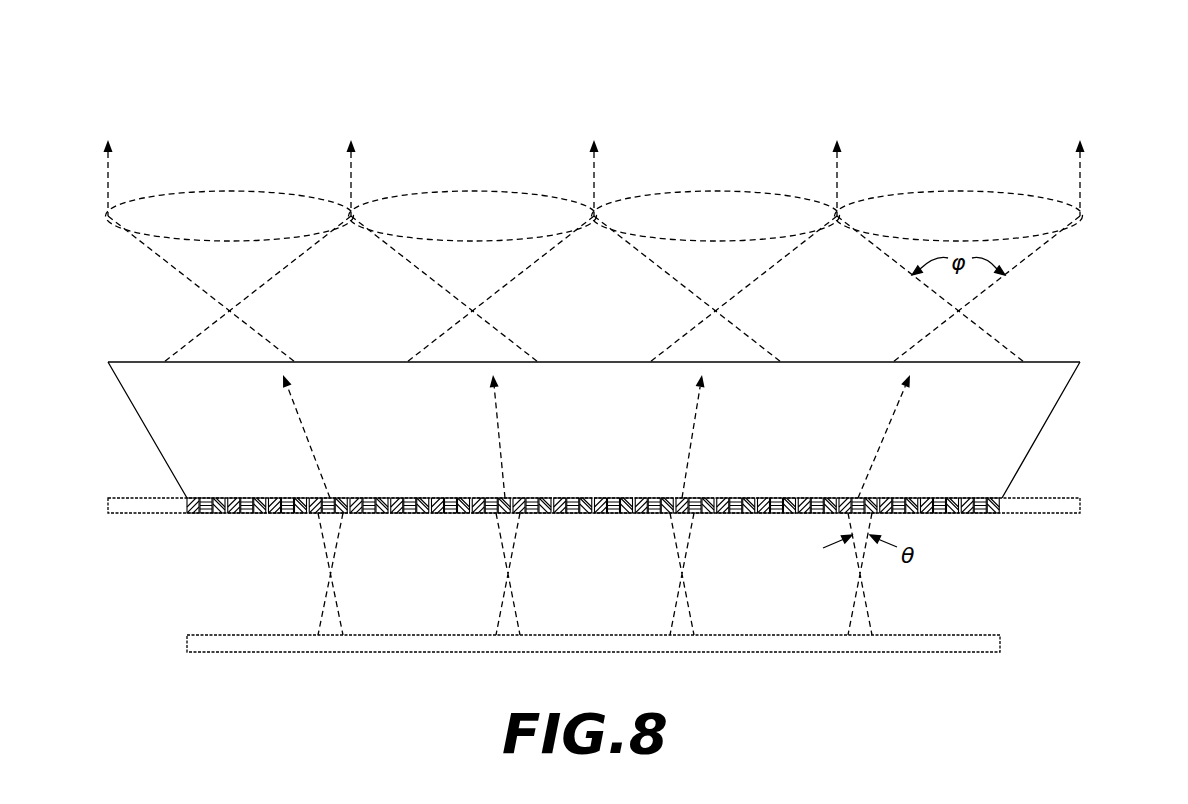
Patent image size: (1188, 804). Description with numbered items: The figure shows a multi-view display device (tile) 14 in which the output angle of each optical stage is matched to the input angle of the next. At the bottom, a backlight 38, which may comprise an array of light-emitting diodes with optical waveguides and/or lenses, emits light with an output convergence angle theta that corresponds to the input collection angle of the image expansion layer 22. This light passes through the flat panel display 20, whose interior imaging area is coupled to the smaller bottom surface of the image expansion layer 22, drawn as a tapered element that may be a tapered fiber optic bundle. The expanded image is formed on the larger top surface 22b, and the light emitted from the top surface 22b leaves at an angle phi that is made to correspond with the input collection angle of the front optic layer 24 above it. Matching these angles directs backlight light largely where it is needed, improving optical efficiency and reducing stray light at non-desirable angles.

The multi-view display device (tile) 14 is at (114, 104).
The flat panel display 20 is at (1106, 512).
The image expansion layer 22 is at (632, 410).
The top surface 22b is at (1057, 349).
The front optic layer 24 is at (1097, 207).
The backlight 38 is at (1000, 643).